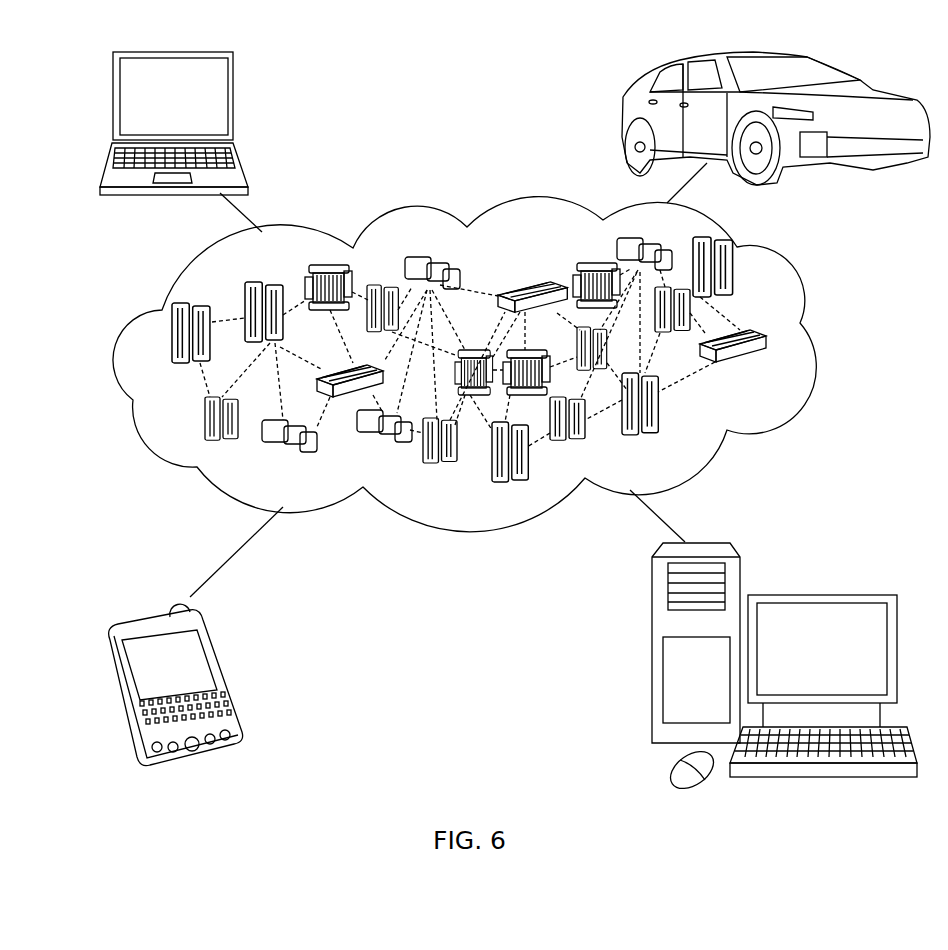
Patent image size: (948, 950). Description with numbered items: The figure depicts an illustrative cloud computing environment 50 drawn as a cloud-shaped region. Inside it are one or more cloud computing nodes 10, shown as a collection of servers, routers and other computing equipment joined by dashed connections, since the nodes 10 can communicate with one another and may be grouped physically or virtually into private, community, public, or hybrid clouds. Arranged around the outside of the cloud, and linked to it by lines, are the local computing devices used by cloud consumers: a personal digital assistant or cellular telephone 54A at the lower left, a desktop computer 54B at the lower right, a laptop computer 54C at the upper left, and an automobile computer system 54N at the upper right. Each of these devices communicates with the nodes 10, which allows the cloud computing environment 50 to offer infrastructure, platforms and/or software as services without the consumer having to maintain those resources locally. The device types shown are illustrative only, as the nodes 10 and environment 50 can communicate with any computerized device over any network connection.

The cloud computing node 10 is at (790, 373).
The cloud computing environment 50 is at (818, 341).
The personal digital assistant (PDA) or cellular telephone 54A is at (227, 677).
The desktop computer 54B is at (818, 593).
The laptop computer 54C is at (237, 104).
The automobile computer system 54N is at (630, 122).